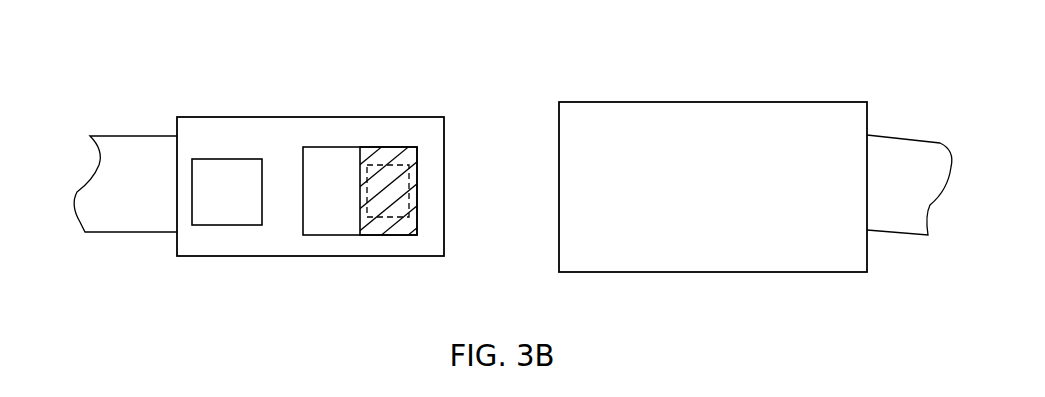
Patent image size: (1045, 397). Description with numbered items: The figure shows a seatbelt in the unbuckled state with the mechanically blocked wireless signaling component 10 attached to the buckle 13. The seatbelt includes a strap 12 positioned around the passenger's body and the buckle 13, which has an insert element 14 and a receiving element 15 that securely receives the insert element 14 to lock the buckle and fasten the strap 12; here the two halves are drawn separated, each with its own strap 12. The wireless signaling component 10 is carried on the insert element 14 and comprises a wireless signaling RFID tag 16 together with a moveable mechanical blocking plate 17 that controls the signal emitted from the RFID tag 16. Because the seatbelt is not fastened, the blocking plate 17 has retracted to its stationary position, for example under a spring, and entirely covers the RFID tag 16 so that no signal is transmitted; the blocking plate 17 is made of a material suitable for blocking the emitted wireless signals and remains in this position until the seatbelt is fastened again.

The wireless signaling component 10 is at (358, 207).
The strap 12 is at (138, 203).
The buckle 13 is at (522, 154).
The insert element 14 is at (272, 200).
The receiving element 15 is at (627, 101).
The RFID tag 16 is at (402, 183).
The mechanical blocking plate 17 is at (360, 233).